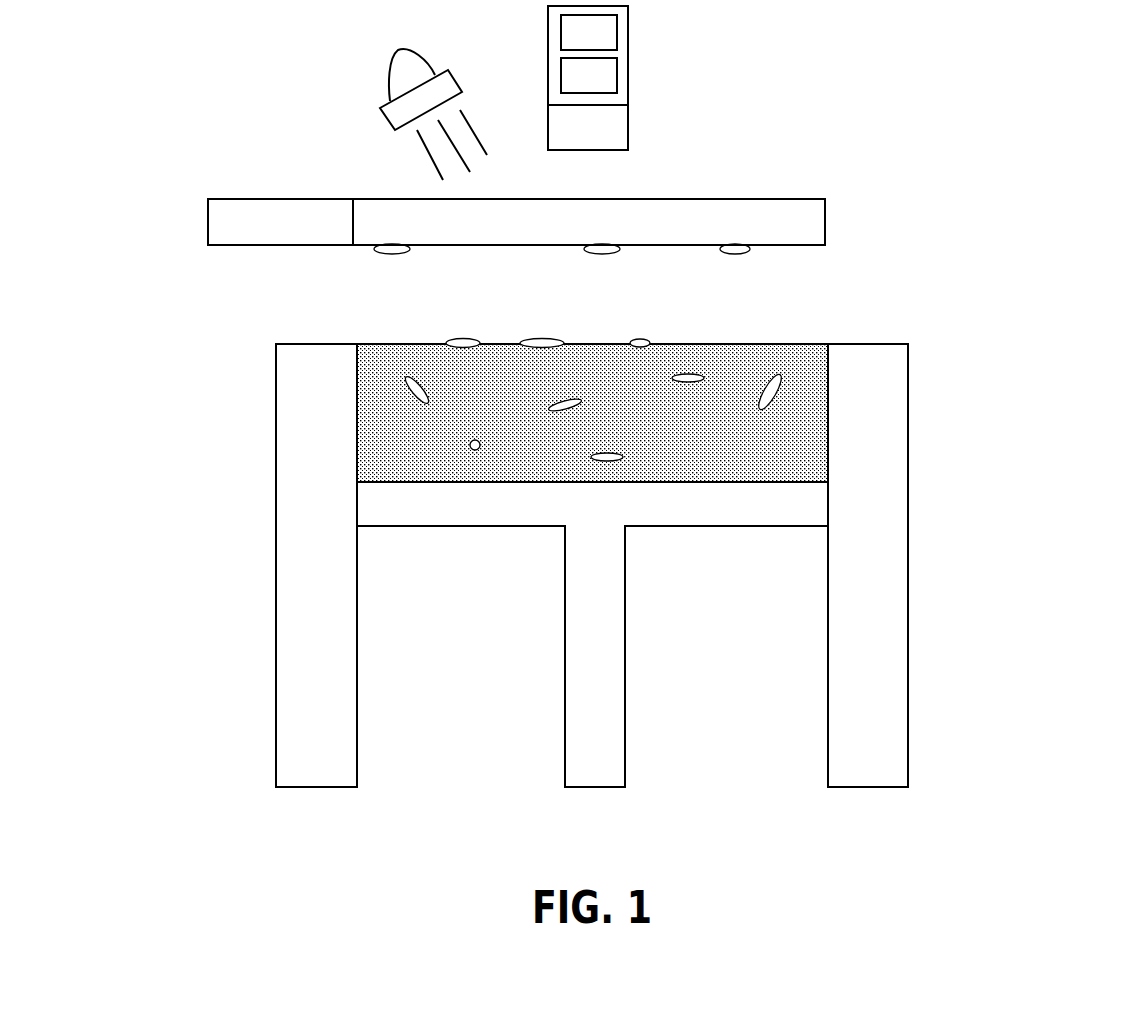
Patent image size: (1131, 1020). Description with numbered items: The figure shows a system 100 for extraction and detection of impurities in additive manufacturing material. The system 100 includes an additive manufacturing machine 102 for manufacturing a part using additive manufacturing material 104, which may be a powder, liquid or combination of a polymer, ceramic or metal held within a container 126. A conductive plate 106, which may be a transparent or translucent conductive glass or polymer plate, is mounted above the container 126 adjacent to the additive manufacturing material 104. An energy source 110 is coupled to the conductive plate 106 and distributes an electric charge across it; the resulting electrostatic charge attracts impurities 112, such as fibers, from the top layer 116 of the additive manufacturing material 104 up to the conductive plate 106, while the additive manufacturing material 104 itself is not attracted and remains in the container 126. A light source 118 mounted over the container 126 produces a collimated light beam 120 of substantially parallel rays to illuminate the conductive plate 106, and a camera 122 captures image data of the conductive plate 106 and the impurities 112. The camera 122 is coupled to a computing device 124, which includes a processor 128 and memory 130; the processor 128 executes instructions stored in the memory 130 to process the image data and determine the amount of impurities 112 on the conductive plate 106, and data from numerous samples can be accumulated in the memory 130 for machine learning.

The system 100 is at (977, 140).
The additive manufacturing machine 102 is at (258, 331).
The additive manufacturing material 104 is at (397, 363).
The conductive plate 106 is at (825, 219).
The energy source 110 is at (208, 222).
The impurities 112 is at (543, 340).
The top layer 116 is at (759, 331).
The light source 118 is at (385, 67).
The collimated light beam 120 is at (467, 122).
The camera 122 is at (628, 118).
The computing device 124 is at (628, 83).
The container 126 is at (274, 422).
The processor 128 is at (589, 32).
The memory 130 is at (589, 75).